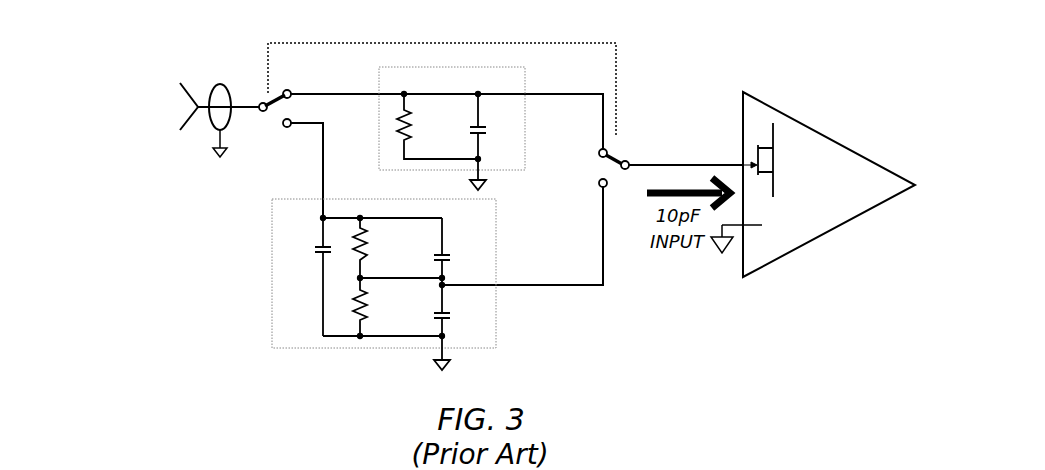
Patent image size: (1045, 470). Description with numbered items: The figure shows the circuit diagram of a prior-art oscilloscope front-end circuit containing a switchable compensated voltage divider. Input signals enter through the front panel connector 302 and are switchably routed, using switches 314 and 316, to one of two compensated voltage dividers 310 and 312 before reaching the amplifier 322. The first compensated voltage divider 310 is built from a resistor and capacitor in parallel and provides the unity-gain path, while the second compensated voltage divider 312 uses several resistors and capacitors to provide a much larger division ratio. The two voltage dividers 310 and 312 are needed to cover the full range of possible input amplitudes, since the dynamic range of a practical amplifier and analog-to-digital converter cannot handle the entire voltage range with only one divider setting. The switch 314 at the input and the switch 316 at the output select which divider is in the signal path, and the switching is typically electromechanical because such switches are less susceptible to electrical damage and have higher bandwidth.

The front panel connector 302 is at (220, 83).
The compensated voltage divider 310 is at (490, 67).
The compensated voltage divider 312 is at (495, 307).
The switch 314 is at (267, 108).
The switch 316 is at (615, 155).
The amplifier 322 is at (820, 240).